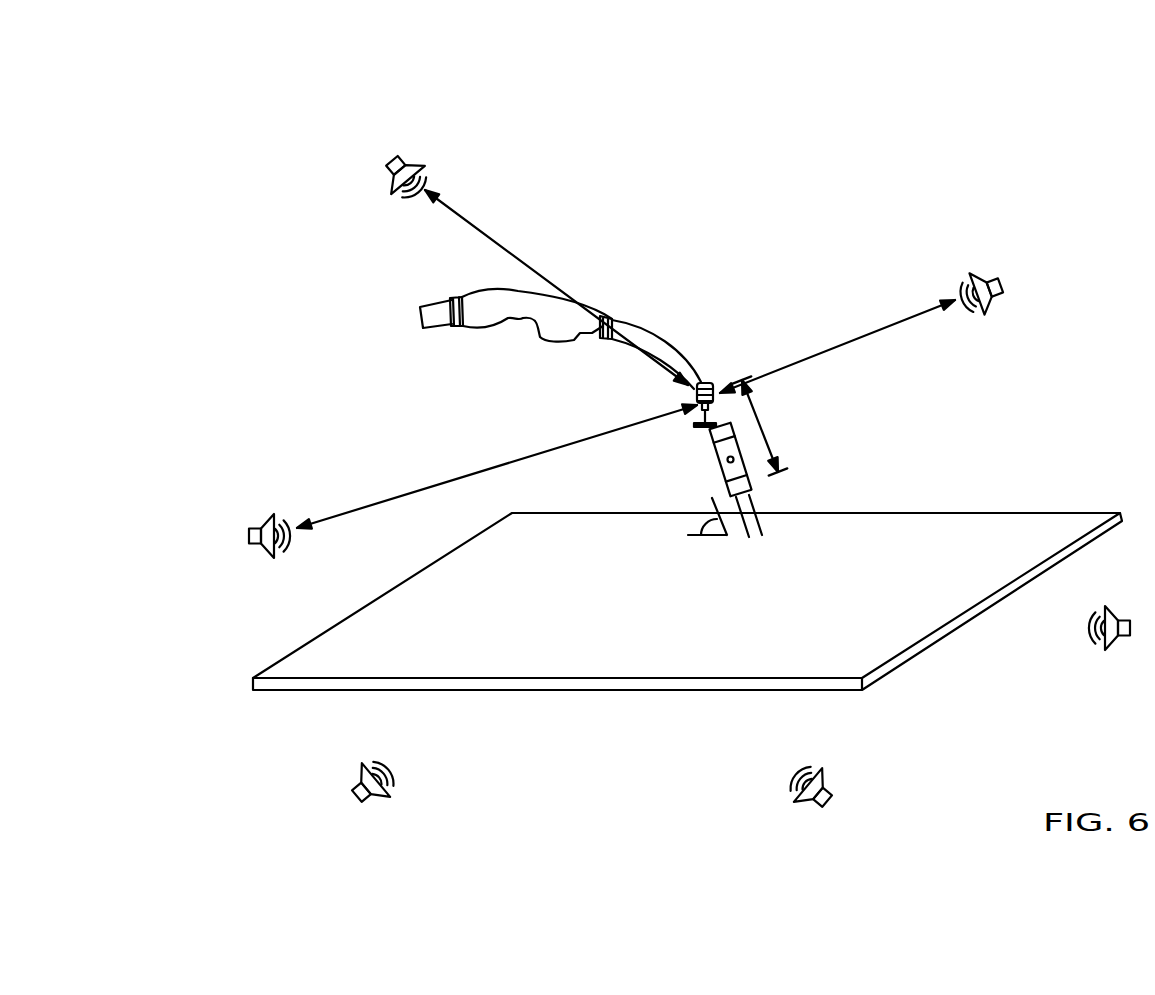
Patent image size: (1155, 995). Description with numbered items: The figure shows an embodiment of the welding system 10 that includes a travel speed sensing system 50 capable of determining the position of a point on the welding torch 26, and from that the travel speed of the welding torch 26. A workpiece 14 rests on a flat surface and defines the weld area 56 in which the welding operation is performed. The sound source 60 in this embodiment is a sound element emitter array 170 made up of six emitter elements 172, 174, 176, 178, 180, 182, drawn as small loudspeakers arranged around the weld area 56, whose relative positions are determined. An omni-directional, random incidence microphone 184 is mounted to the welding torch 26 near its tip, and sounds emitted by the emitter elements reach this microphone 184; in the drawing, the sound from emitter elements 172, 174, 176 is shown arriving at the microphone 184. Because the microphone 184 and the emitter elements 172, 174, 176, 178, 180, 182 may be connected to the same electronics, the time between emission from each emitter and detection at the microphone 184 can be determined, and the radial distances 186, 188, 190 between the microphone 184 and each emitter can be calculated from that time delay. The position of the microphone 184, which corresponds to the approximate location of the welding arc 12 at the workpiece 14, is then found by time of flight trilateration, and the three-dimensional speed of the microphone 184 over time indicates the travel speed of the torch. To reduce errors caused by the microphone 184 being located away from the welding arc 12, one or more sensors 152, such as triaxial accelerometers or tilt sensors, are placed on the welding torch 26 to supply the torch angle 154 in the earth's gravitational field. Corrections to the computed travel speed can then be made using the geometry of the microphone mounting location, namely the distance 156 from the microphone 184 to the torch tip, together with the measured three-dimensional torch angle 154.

The welding system 10 is at (312, 108).
The welding arc 12 is at (760, 522).
The workpiece 14 is at (558, 690).
The welding torch 26 is at (508, 288).
The travel speed sensing system 50 is at (878, 172).
The weld area 56 is at (1018, 419).
The sound source 60 is at (236, 453).
The sound element emitter array 170 is at (220, 386).
The sensors 152 is at (712, 458).
The torch angle 154 is at (700, 522).
The distance 156 is at (767, 420).
The emitter element 172 is at (1000, 283).
The emitter element 174 is at (401, 152).
The emitter element 176 is at (255, 524).
The emitter element 178 is at (355, 797).
The emitter element 180 is at (830, 808).
The emitter element 182 is at (1120, 642).
The microphone 184 is at (712, 378).
The radial distance 186 is at (843, 344).
The radial distance 188 is at (522, 262).
The radial distance 190 is at (489, 468).